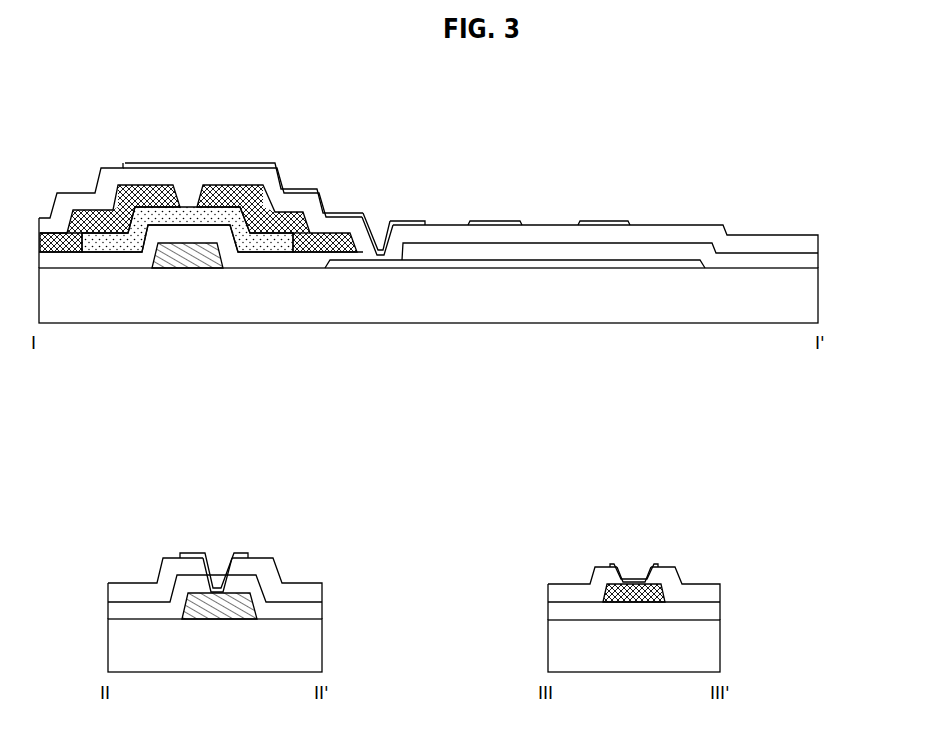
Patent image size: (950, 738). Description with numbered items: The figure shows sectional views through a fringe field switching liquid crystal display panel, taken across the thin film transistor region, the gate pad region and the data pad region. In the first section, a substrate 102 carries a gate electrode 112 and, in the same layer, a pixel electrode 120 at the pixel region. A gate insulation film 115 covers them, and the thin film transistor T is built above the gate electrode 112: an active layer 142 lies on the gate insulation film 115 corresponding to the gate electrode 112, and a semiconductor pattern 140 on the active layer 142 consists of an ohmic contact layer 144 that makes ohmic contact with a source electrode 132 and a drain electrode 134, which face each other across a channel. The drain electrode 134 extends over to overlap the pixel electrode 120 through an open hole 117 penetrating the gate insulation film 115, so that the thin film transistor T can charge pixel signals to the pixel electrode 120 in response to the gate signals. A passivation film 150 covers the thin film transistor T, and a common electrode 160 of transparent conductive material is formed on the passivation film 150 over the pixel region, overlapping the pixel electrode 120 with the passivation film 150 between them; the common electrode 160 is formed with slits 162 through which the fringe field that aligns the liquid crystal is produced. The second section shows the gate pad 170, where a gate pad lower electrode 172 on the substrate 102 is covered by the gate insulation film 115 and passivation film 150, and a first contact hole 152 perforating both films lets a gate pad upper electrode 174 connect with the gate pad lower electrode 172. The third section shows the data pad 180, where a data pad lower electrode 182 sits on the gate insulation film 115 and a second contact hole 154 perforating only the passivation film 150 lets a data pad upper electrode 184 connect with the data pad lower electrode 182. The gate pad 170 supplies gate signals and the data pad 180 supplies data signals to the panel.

The substrate 102 is at (818, 298).
The gate electrode 112 is at (187, 255).
The gate insulation film 115 is at (818, 258).
The open hole 117 is at (380, 243).
The pixel electrode 120 is at (548, 270).
The source electrode 132 is at (146, 192).
The drain electrode 134 is at (226, 192).
The semiconductor pattern 140 is at (272, 367).
The active layer 142 is at (112, 243).
The ohmic contact layer 144 is at (277, 230).
The passivation film 150 is at (818, 244).
The first contact hole 152 is at (218, 552).
The second contact hole 154 is at (633, 557).
The common electrode 160 is at (608, 221).
The slits 162 is at (447, 208).
The gate pad 170 is at (326, 542).
The gate pad lower electrode 172 is at (220, 605).
The gate pad upper electrode 174 is at (246, 556).
The data pad 180 is at (743, 545).
The data pad lower electrode 182 is at (640, 600).
The data pad upper electrode 184 is at (651, 565).
The thin film transistor T is at (297, 149).